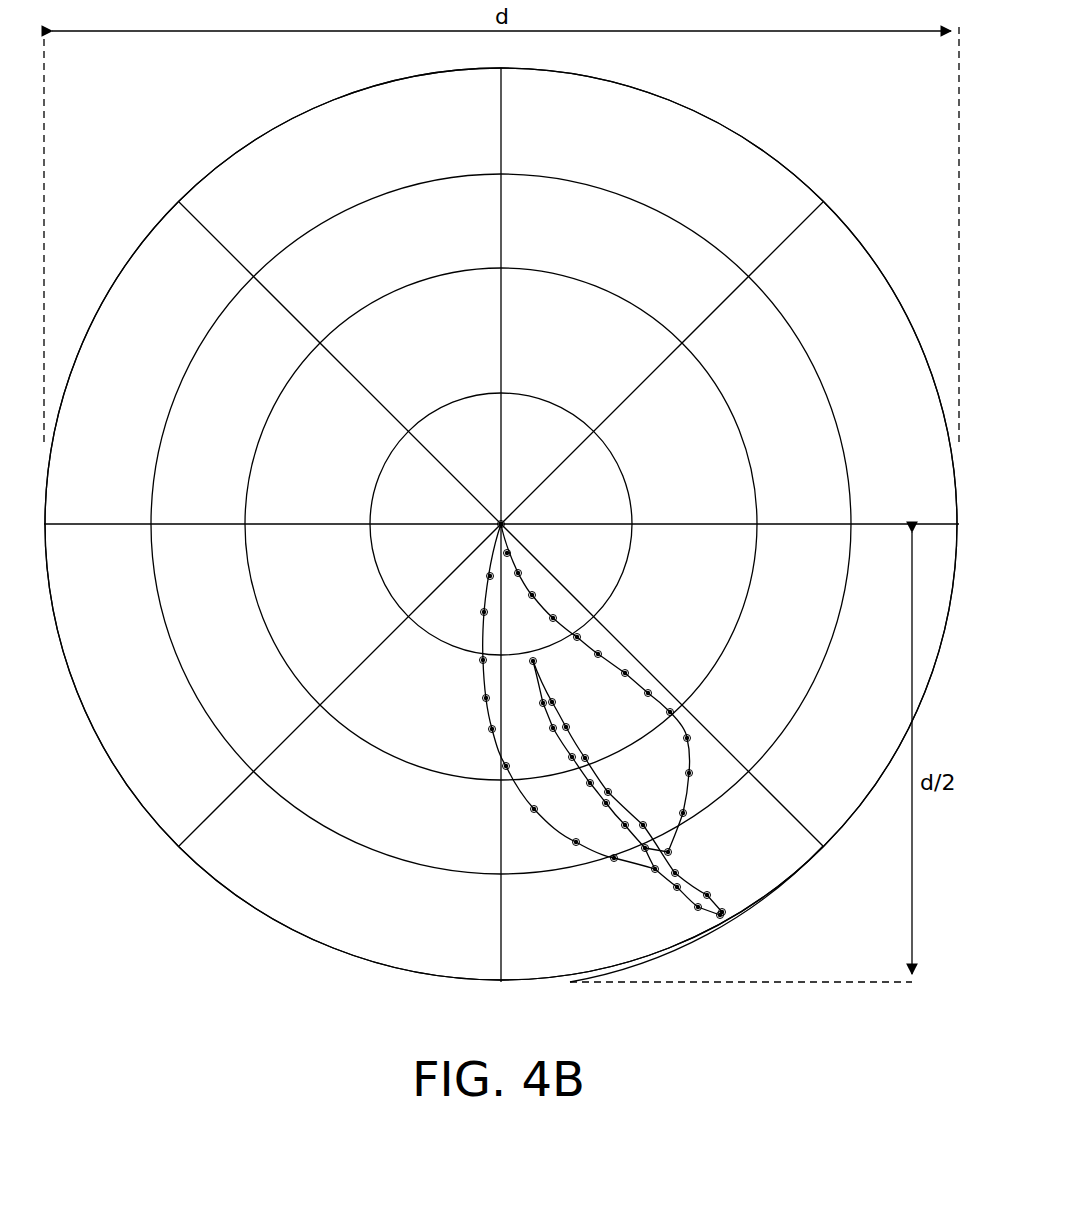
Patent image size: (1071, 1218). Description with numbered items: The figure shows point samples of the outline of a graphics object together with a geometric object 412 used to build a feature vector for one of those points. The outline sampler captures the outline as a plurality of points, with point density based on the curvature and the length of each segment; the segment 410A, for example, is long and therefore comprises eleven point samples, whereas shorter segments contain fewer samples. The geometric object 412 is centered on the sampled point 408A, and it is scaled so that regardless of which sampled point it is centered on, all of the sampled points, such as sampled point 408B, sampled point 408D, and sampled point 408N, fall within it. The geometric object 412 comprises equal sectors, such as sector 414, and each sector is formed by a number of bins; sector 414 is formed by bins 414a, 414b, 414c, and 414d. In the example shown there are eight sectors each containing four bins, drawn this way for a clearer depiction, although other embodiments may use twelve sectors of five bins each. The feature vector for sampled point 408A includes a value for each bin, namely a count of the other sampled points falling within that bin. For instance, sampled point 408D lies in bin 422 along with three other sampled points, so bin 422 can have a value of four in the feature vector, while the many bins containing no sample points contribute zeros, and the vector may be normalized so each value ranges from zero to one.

The geometric object 412 is at (104, 257).
The sector 414 is at (94, 760).
The bin 414a is at (418, 546).
The bin 414b is at (308, 546).
The bin 414c is at (196, 546).
The bin 414d is at (95, 546).
The sampled point 408A is at (505, 520).
The sampled point 408B is at (580, 636).
The sampled point 408D is at (511, 553).
The sampled point 408N is at (652, 689).
The segment 410A is at (476, 641).
The bin 422 is at (758, 878).